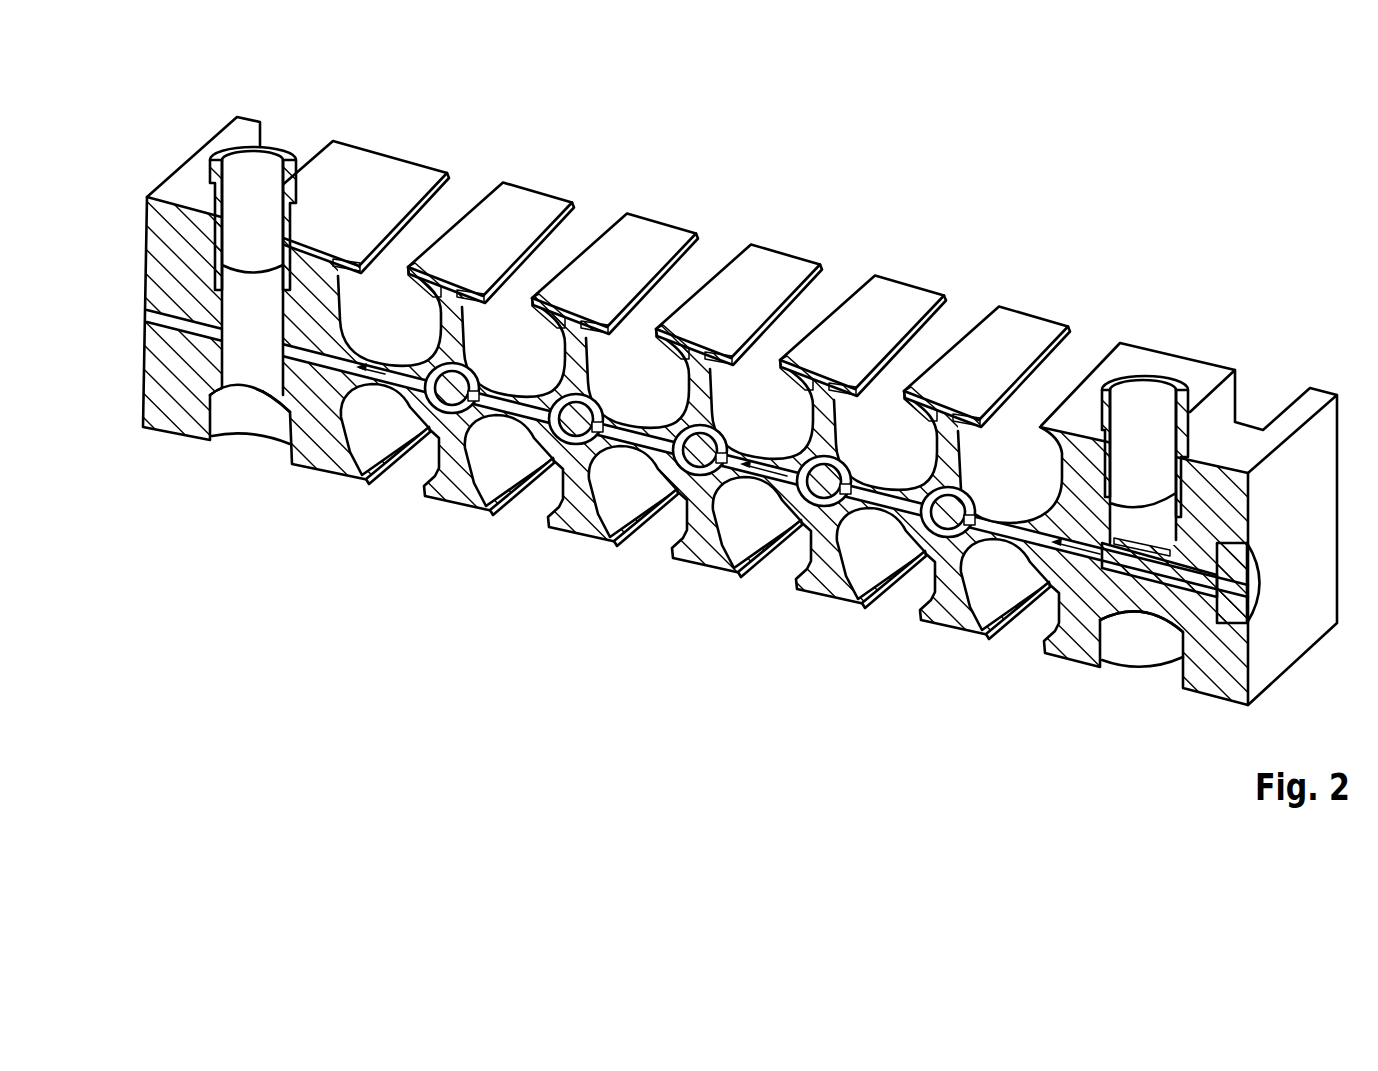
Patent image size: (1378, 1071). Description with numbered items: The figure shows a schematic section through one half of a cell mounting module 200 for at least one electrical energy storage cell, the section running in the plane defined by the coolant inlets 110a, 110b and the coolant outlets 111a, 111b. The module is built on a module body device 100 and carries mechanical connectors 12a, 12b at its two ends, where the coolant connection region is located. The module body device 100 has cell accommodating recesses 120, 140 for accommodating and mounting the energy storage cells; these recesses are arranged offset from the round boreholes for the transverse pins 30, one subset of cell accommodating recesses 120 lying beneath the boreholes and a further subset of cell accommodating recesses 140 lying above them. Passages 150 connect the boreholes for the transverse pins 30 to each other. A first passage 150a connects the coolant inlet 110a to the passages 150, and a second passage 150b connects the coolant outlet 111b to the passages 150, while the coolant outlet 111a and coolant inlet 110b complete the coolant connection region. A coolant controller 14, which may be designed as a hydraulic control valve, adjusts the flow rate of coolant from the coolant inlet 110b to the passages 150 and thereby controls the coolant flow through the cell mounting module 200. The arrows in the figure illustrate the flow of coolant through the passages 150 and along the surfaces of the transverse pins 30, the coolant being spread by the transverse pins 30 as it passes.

The module body device 100 is at (1318, 397).
The cell mounting module 200 is at (697, 417).
The mechanical connector 12a is at (246, 160).
The mechanical connector 12b is at (1147, 398).
The coolant outlet 111a is at (232, 290).
The coolant outlet 111b is at (1155, 517).
The coolant inlet 110a is at (224, 420).
The coolant inlet 110b is at (1118, 648).
The coolant controller 14 is at (1248, 598).
The cell accommodating recess 140 is at (1086, 340).
The cell accommodating recess 120 is at (1022, 632).
The transverse pin 30 is at (946, 524).
The passage 150 is at (885, 501).
The first passage 150a is at (340, 365).
The second passage 150b is at (1009, 532).